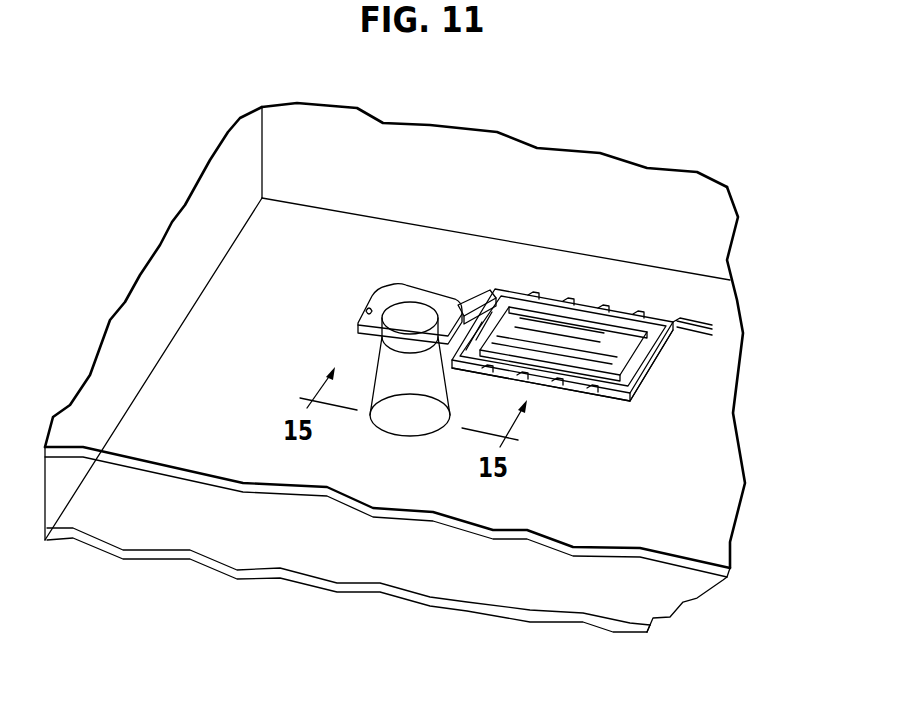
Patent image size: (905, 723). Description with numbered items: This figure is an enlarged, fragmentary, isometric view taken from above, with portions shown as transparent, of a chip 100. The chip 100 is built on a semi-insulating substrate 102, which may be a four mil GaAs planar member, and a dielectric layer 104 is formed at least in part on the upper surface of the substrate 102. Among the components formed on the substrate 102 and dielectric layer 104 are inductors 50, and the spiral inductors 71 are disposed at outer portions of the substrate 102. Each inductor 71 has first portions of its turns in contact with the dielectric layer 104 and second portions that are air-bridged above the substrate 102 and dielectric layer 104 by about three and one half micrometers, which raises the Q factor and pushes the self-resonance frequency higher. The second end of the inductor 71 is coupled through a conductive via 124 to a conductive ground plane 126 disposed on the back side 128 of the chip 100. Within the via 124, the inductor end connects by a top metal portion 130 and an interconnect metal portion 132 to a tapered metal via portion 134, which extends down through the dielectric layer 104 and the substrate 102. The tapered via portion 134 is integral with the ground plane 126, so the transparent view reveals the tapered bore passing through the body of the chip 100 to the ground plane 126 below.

The chip 100 is at (665, 153).
The semi-insulating substrate 102 is at (219, 545).
The dielectric layer 104 is at (163, 470).
The conductive via 124 is at (403, 418).
The conductive ground plane 126 is at (630, 627).
The back side 128 is at (185, 550).
The top metal portion 130 is at (467, 310).
The interconnect metal portion 132 is at (358, 323).
The tapered metal via portion 134 is at (408, 303).
The inductor 50 is at (667, 372).
The inductor 71 is at (622, 403).